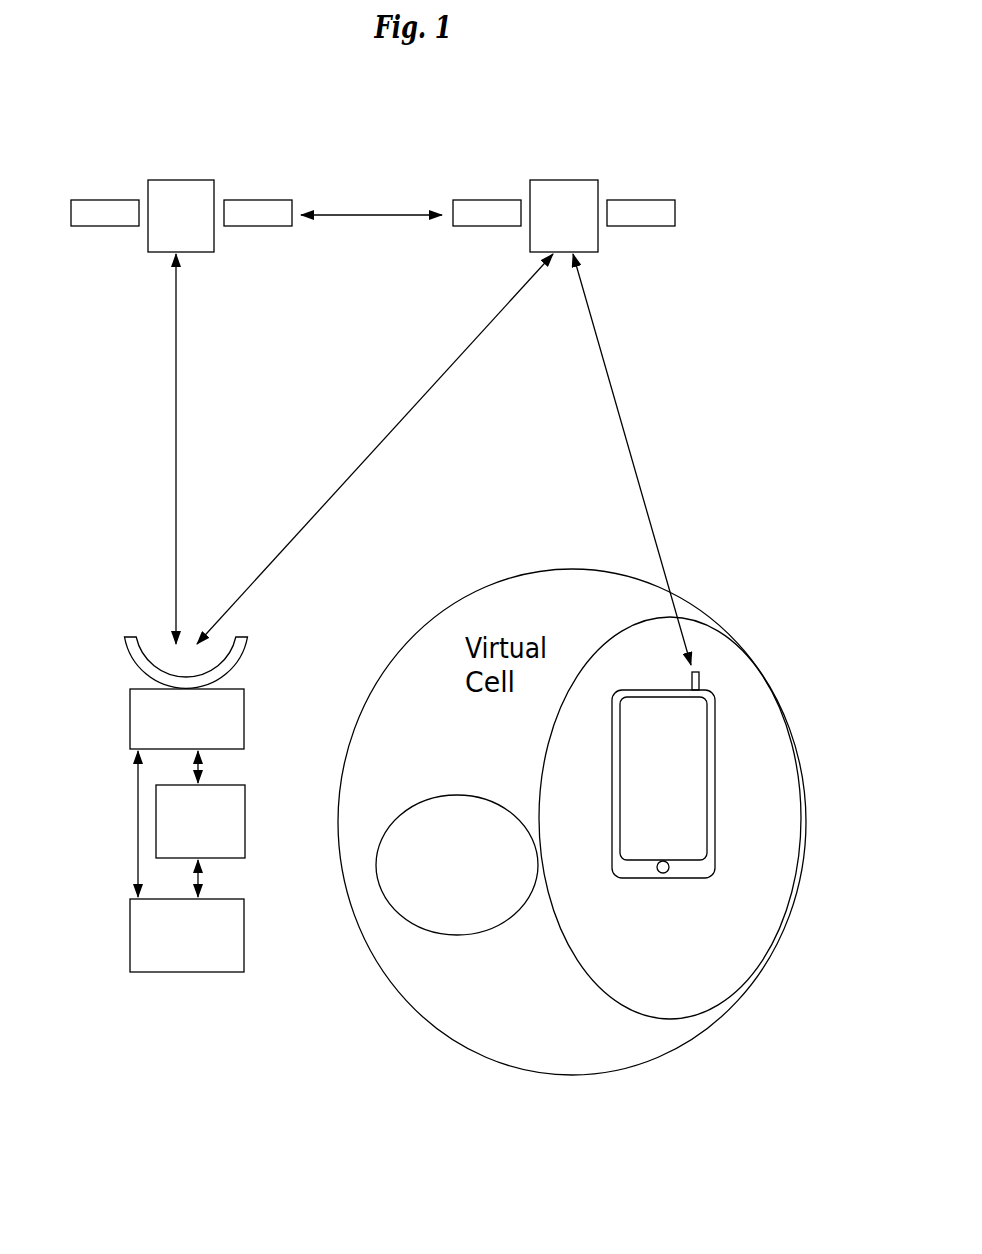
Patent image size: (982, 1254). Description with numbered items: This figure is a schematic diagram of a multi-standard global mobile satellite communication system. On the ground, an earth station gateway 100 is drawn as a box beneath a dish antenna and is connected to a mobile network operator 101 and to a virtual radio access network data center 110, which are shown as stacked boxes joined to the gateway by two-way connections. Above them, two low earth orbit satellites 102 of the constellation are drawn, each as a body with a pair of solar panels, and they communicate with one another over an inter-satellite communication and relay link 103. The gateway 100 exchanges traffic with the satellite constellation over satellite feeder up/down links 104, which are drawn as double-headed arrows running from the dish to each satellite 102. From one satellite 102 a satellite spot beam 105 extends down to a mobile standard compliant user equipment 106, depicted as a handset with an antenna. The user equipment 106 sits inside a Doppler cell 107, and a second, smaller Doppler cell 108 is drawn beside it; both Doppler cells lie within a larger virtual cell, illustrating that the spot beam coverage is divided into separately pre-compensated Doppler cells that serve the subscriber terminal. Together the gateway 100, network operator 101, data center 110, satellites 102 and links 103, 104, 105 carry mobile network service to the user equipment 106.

The earth station gateway 100 is at (248, 720).
The mobile cellular network operator 101 is at (246, 822).
The low earth orbit satellite 102 is at (178, 178).
The inter-satellite communication and relay link 103 is at (361, 212).
The satellite feeder up/down link 104 is at (177, 433).
The satellite spot beam 105 is at (622, 423).
The user equipment 106 is at (717, 730).
The virtual cell 107 is at (693, 603).
The Doppler cell 108 is at (498, 931).
The virtual radio access network data center 110 is at (246, 933).